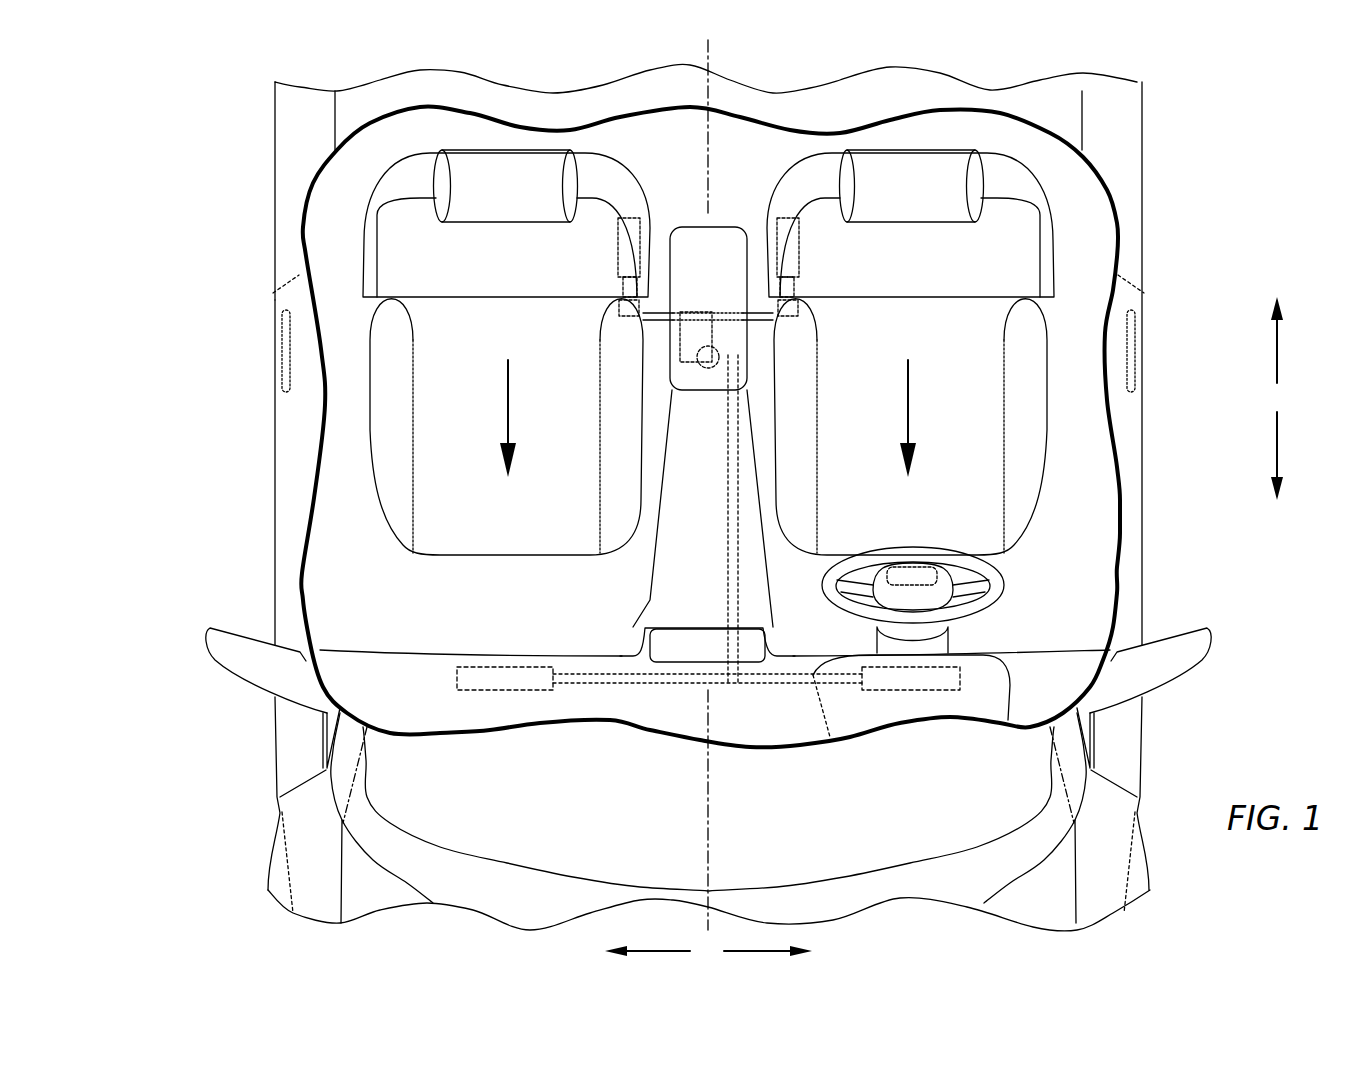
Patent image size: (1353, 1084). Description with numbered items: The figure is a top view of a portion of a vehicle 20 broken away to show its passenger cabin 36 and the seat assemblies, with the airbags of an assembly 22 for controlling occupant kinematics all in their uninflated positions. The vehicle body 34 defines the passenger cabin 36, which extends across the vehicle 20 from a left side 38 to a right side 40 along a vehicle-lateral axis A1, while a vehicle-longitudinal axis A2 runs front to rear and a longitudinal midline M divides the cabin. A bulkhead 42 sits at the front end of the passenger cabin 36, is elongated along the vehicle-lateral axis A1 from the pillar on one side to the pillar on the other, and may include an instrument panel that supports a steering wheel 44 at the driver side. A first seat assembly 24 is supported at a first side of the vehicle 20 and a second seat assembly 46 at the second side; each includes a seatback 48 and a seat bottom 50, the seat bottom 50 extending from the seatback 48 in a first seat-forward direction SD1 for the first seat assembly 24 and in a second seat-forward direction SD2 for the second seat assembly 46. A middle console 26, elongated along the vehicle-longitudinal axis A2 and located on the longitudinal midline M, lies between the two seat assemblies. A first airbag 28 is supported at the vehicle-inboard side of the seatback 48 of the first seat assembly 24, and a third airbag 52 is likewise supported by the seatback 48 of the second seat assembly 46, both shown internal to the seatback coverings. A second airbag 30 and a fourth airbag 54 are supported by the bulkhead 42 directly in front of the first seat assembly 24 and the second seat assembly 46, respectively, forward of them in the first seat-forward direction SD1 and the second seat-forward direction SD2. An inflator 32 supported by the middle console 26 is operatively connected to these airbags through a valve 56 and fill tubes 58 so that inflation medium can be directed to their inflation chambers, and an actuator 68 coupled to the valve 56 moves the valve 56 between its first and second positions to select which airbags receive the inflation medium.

The vehicle 20 is at (168, 339).
The assembly 22 is at (760, 146).
The first seat assembly 24 is at (1074, 263).
The middle console 26 is at (670, 455).
The first airbag 28 is at (803, 271).
The second airbag 30 is at (917, 685).
The inflator 32 is at (706, 305).
The vehicle body 34 is at (292, 130).
The passenger cabin 36 is at (372, 155).
The left side 38 is at (1128, 600).
The right side 40 is at (291, 448).
The bulkhead 42 is at (1050, 668).
The steering wheel 44 is at (993, 593).
The second seat assembly 46 is at (341, 262).
The seatback 48 is at (600, 175).
The seat bottom 50 is at (403, 520).
The third airbag 52 is at (616, 267).
The fourth airbag 54 is at (503, 680).
The valve 56 is at (696, 392).
The fill tubes 58 is at (630, 314).
The actuator 68 is at (718, 352).
The longitudinal midline M is at (712, 68).
The first seat-forward direction SD1 is at (909, 418).
The second seat-forward direction SD2 is at (508, 418).
The vehicle-lateral axis A1 is at (708, 951).
The vehicle-longitudinal axis A2 is at (1278, 398).